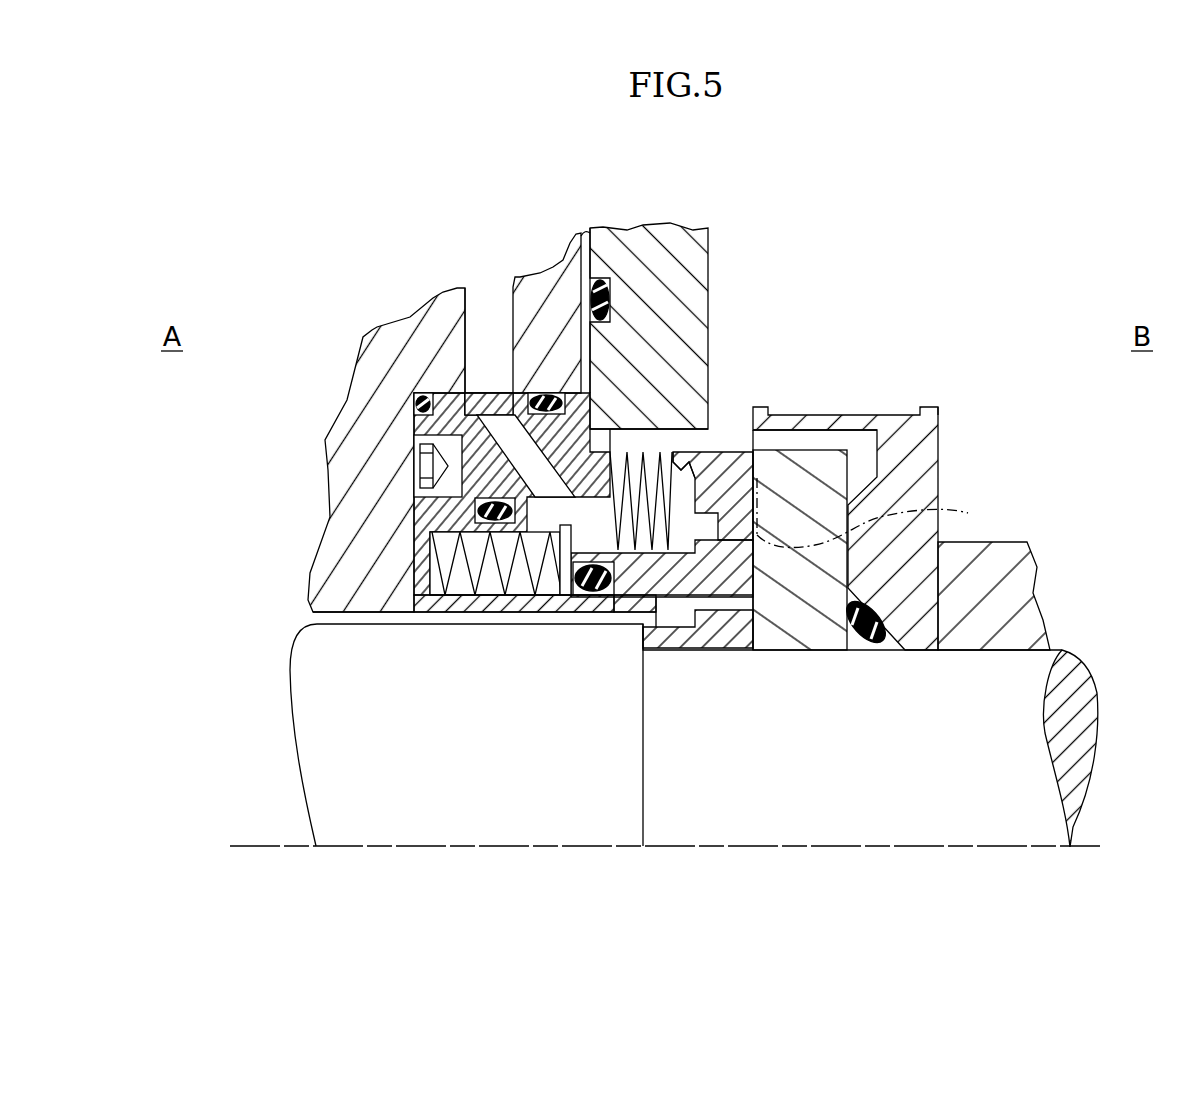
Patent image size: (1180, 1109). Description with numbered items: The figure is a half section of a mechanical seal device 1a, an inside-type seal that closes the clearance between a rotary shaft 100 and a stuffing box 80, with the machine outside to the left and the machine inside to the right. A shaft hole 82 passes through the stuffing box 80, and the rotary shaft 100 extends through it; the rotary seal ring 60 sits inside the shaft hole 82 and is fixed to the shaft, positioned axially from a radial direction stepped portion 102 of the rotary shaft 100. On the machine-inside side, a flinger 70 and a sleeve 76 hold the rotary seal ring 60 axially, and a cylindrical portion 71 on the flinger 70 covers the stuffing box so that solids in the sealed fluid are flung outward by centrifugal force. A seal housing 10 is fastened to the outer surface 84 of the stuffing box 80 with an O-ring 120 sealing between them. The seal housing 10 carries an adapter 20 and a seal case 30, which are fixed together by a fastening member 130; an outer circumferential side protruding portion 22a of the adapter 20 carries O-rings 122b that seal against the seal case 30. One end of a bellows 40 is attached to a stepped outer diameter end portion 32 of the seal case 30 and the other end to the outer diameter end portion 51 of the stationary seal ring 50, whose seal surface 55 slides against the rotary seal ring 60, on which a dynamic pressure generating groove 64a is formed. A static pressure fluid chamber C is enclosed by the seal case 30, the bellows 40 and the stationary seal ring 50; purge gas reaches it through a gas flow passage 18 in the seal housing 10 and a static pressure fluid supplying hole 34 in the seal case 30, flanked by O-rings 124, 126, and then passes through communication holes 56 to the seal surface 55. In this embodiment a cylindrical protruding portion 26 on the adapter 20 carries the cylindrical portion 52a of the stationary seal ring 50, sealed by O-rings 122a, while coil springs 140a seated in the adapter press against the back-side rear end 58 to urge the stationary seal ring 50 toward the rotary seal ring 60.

The mechanical seal device 1a is at (919, 255).
The seal housing 10 is at (372, 332).
The gas flow passage 18 is at (493, 340).
The adapter 20 is at (460, 600).
The outer circumferential side protruding portion 22a is at (455, 545).
The cylindrical protruding portion 26 is at (450, 565).
The seal case 30 is at (413, 408).
The stepped outer diameter end portion 32 is at (608, 597).
The static pressure fluid supplying hole 34 is at (421, 393).
The bellows 40 is at (710, 450).
The stationary seal ring 50 is at (712, 575).
The outer diameter end portion 51 is at (680, 447).
The cylindrical portion 52a is at (650, 612).
The seal surface 55 is at (760, 590).
The communication holes 56 is at (716, 525).
The back-side rear end 58 is at (550, 600).
The rotary seal ring 60 is at (828, 610).
The dynamic pressure generating groove 64a is at (888, 513).
The flinger 70 is at (910, 610).
The cylindrical portion 71 is at (823, 433).
The sleeve 76 is at (987, 608).
The stuffing box 80 is at (710, 276).
The shaft hole 82 is at (657, 443).
The outer surface 84 is at (578, 237).
The rotary shaft 100 is at (320, 707).
The radial direction stepped portion 102 is at (643, 630).
The O-ring 120 is at (610, 293).
The O-ring 122a is at (582, 595).
The O-ring 122b is at (470, 522).
The O-ring 124 is at (378, 355).
The O-ring 126 is at (546, 392).
The fastening member 130 is at (412, 462).
The coil springs 140a is at (433, 598).
The static pressure fluid chamber C is at (662, 607).